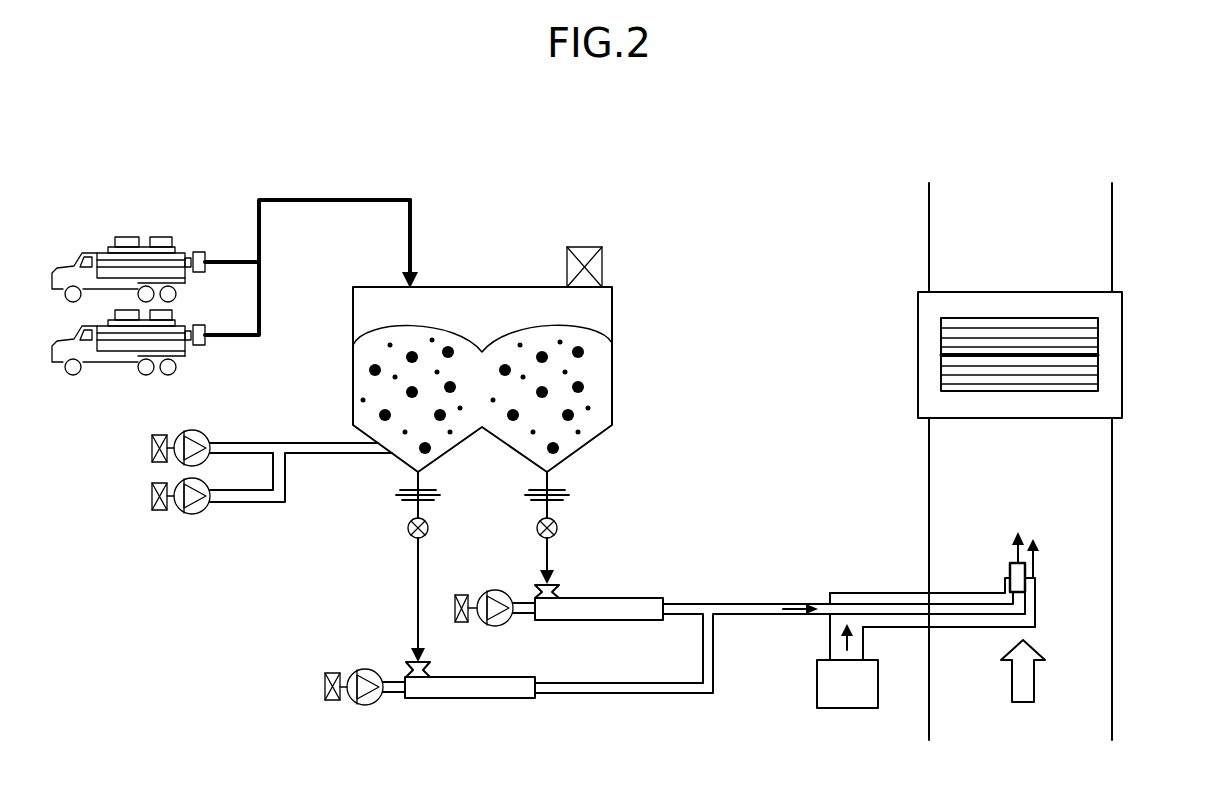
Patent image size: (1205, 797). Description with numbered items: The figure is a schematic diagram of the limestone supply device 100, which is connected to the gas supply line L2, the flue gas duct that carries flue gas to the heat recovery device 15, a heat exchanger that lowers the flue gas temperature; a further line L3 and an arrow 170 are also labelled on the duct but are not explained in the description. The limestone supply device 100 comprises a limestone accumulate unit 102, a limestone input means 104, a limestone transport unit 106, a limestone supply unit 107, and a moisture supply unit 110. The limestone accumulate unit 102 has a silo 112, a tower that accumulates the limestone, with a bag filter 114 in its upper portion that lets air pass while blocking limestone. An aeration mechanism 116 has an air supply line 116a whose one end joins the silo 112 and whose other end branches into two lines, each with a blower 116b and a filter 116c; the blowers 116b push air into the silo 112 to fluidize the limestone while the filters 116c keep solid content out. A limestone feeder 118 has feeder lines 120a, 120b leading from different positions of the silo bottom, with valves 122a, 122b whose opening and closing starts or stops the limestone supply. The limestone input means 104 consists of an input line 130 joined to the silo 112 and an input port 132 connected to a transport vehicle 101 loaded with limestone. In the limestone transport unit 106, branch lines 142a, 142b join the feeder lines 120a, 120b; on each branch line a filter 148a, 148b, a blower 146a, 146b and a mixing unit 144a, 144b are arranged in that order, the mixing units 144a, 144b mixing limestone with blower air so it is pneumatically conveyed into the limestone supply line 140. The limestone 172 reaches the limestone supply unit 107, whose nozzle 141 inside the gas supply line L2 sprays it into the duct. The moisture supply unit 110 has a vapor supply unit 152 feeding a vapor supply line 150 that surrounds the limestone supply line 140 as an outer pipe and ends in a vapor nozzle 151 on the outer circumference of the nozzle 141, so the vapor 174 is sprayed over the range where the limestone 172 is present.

The heat recovery device 15 is at (1123, 390).
The limestone supply device 100 is at (553, 222).
The transport vehicle 101 is at (80, 257).
The limestone accumulate unit 102 is at (628, 296).
The limestone input means 104 is at (428, 205).
The limestone transport unit 106 is at (667, 686).
The limestone supply unit 107 is at (920, 537).
The moisture supply unit 110 is at (816, 681).
The silo 112 is at (614, 322).
The bag filter 114 is at (566, 266).
The aeration mechanism 116 is at (233, 467).
The air supply line 116a is at (305, 455).
The blower 116b is at (181, 432).
The filter 116c is at (151, 448).
The limestone feeder 118 is at (584, 481).
The feeder line 120a is at (550, 553).
The feeder line 120b is at (421, 553).
The valve 122a is at (536, 528).
The valve 122b is at (407, 528).
The input line 130 is at (328, 199).
The input port 132 is at (198, 250).
The limestone supply line 140 is at (766, 616).
The nozzle 141 is at (1009, 570).
The branch line 142a is at (703, 622).
The branch line 142b is at (642, 694).
The mixing unit 144a is at (555, 622).
The mixing unit 144b is at (427, 692).
The blower 146a is at (496, 627).
The blower 146b is at (362, 668).
The filter 148a is at (454, 611).
The filter 148b is at (332, 671).
The vapor supply line 150 is at (968, 629).
The vapor nozzle 151 is at (1037, 604).
The vapor supply unit 152 is at (844, 710).
The flow direction 170 is at (1047, 683).
The limestone 172 is at (790, 603).
The vapor 174 is at (1041, 560).
The gas supply line L2 is at (1113, 528).
The line L3 is at (1113, 240).